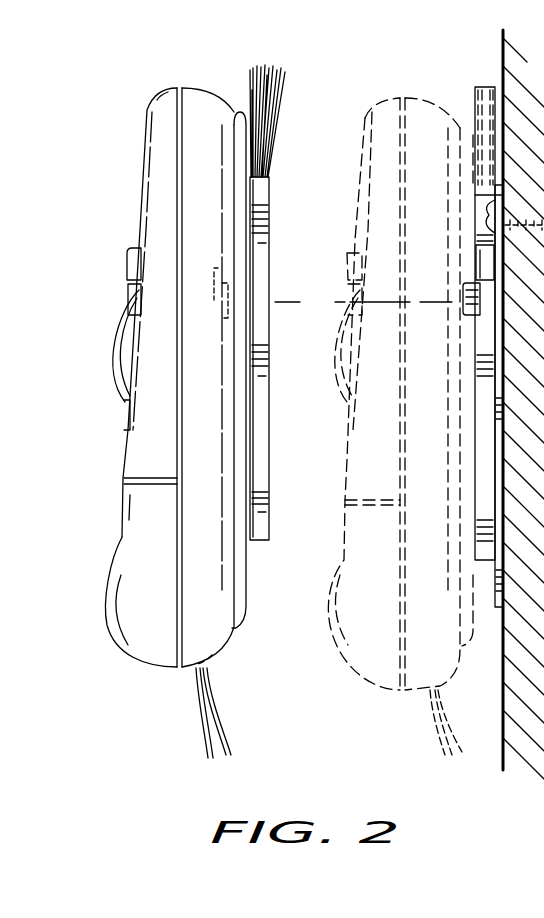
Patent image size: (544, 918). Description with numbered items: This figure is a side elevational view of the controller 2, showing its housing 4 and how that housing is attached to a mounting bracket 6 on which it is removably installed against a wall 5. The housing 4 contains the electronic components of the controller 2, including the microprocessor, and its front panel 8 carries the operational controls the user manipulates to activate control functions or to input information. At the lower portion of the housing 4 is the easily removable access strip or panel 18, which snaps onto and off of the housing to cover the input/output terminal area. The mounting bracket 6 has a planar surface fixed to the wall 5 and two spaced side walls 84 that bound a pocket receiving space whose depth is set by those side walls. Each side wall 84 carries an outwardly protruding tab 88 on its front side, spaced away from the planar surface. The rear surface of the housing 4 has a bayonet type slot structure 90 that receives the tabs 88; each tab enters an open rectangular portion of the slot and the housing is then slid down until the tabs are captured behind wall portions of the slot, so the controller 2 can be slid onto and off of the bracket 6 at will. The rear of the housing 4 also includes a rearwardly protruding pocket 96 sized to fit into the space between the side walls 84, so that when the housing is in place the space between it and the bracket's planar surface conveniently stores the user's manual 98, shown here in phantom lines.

The controller 2 is at (146, 74).
The housing 4 is at (201, 112).
The wall 5 is at (503, 62).
The mounting bracket 6 is at (468, 258).
The front panel 8 is at (143, 191).
The access strip or panel 18 is at (145, 620).
The side walls 84 is at (476, 464).
The tab 88 is at (463, 300).
The bayonet type slot structure 90 is at (220, 298).
The pocket 96 is at (274, 199).
The user's or operator's manual 98 is at (274, 92).